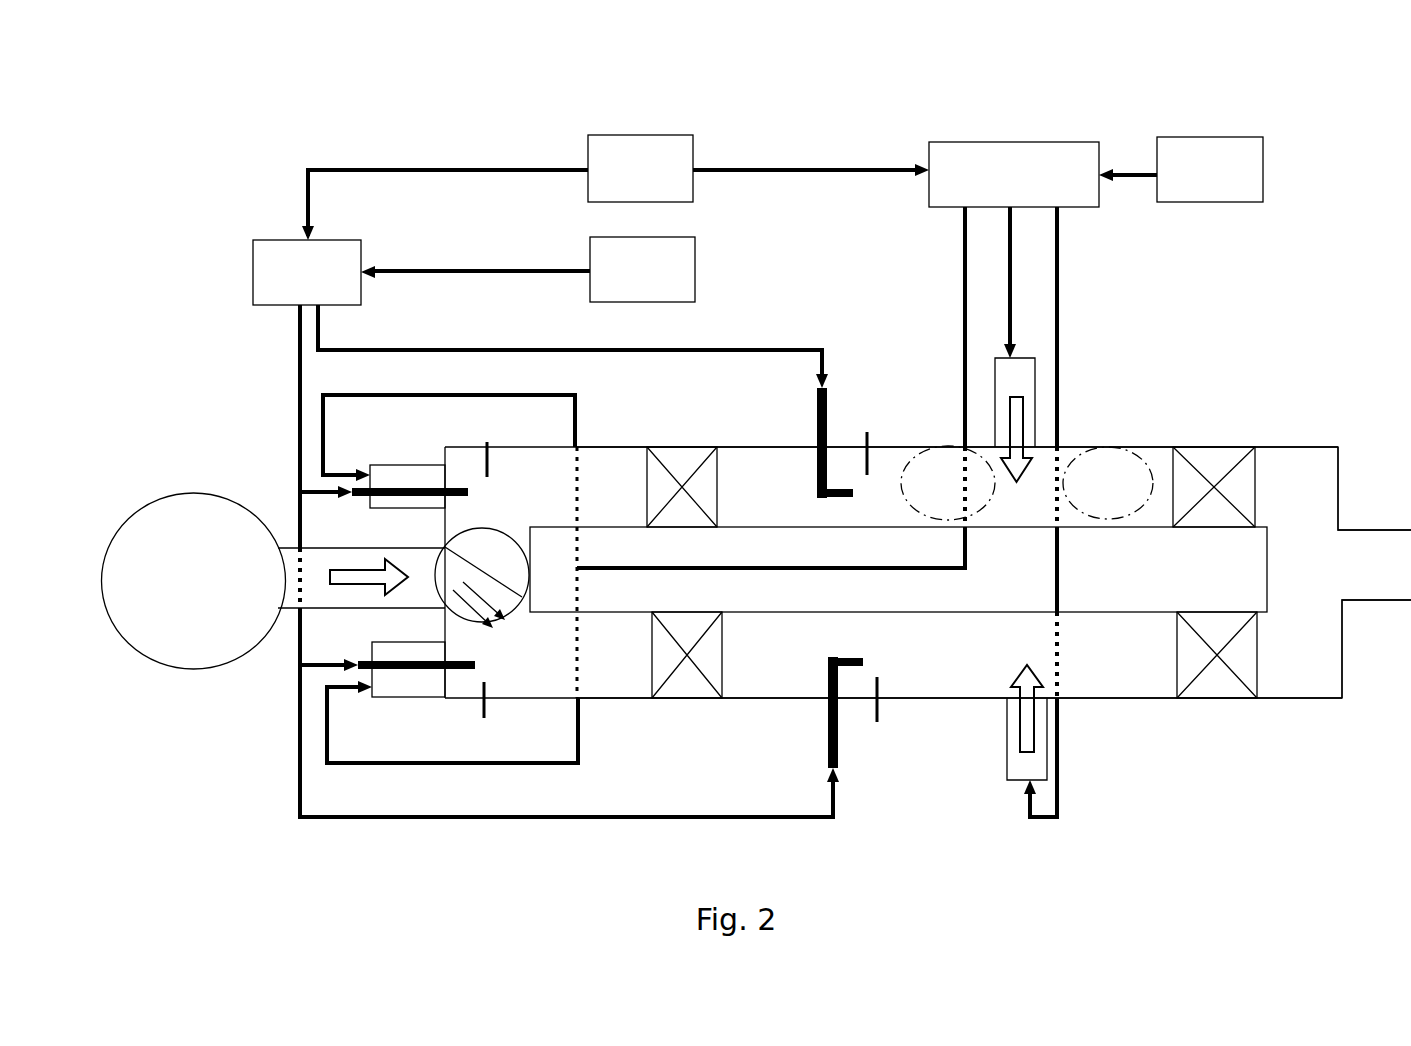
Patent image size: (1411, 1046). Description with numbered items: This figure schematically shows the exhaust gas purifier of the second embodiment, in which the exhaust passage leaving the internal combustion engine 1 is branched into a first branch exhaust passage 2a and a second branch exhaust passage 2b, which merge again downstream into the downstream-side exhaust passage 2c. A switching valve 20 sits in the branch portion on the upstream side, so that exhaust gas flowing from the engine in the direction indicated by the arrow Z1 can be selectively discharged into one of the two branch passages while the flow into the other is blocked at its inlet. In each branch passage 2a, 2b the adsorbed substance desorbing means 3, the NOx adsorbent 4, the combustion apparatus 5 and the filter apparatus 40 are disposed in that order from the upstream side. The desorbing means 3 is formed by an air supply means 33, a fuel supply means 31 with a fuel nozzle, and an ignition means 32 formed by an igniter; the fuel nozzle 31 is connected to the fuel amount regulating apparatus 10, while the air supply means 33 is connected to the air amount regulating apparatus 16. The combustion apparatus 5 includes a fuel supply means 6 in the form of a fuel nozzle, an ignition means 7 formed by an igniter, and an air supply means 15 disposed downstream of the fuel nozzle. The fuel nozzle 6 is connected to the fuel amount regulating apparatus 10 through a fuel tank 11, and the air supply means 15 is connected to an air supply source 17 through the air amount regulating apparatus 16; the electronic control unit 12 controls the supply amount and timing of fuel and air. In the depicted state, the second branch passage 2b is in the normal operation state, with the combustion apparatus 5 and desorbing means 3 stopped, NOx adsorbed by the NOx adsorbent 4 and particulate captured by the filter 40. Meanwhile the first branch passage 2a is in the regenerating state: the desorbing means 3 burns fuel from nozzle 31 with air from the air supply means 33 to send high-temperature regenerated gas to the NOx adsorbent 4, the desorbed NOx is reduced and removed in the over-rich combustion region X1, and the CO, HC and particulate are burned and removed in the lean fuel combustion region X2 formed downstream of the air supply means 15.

The internal combustion engine 1 is at (185, 493).
The first branch exhaust passage 2a is at (760, 447).
The second branch exhaust passage 2b is at (770, 698).
The downstream-side exhaust passage 2c is at (1372, 530).
The adsorbed substance desorbing means 3 is at (290, 434).
The NOx adsorbent 4 is at (678, 455).
The combustion apparatus 5 is at (940, 360).
The fuel supply means 6 is at (828, 412).
The ignition means 7 is at (870, 438).
The fuel amount regulating apparatus 10 is at (253, 268).
The fuel tank 11 is at (695, 268).
The electronic control unit 12 is at (665, 135).
The air supply means 15 is at (1035, 374).
The air amount regulating apparatus 16 is at (980, 142).
The air supply source 17 is at (1210, 137).
The switching valve 20 is at (506, 535).
The fuel supply means 31 is at (418, 488).
The ignition means 32 is at (487, 442).
The air supply means 33 is at (378, 465).
The filter apparatus 40 is at (1212, 455).
The over-rich combustion region X1 is at (926, 450).
The lean fuel combustion region X2 is at (1142, 447).
The exhaust gas flow direction Z1 is at (352, 570).